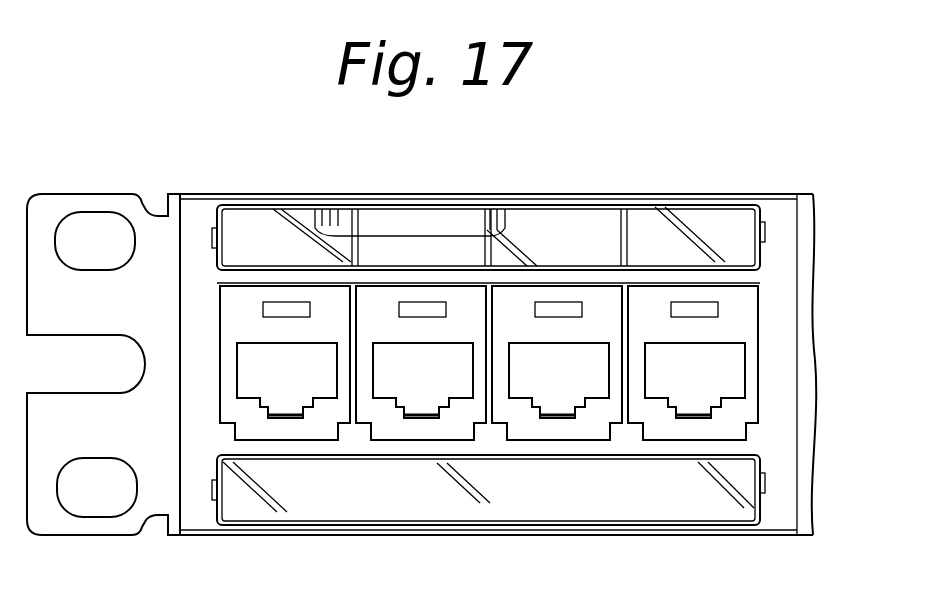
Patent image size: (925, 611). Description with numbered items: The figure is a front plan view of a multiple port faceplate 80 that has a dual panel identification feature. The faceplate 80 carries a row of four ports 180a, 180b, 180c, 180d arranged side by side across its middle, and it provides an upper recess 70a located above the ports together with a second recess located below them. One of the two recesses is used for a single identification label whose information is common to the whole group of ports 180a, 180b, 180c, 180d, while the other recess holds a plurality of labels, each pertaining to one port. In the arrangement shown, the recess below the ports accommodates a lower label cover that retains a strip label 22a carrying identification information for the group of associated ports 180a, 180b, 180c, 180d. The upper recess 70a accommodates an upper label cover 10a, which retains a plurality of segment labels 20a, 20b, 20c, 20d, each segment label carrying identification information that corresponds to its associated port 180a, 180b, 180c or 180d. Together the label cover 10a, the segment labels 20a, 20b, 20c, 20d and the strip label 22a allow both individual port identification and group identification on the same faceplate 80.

The upper label cover 10a is at (763, 248).
The segment label 20a is at (245, 230).
The segment label 20b is at (457, 218).
The segment label 20c is at (503, 220).
The segment label 20d is at (715, 218).
The strip label 22a is at (740, 452).
The upper recess 70a is at (760, 210).
The faceplate 80 is at (207, 515).
The port 180a is at (270, 360).
The port 180b is at (395, 362).
The port 180c is at (575, 360).
The port 180d is at (665, 358).